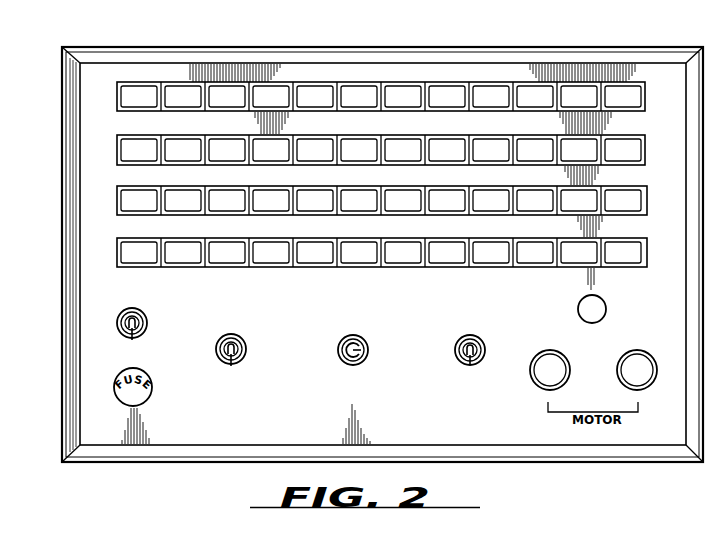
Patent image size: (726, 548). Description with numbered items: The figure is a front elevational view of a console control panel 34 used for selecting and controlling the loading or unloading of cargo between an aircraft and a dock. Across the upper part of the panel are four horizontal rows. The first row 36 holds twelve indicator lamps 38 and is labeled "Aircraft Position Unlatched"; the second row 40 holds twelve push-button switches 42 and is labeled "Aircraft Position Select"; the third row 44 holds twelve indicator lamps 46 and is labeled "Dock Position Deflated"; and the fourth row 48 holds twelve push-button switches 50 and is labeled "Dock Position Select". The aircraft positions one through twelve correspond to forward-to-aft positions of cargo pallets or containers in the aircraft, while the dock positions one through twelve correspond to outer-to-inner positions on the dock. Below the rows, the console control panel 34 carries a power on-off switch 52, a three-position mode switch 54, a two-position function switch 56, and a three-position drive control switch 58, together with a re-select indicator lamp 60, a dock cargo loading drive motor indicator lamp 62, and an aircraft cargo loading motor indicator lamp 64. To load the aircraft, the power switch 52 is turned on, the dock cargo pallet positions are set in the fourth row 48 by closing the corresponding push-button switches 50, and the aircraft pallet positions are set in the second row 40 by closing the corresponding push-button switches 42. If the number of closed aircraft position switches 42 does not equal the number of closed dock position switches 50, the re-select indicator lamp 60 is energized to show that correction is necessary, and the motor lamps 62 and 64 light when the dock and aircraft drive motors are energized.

The console control panel 34 is at (652, 46).
The first row 36 is at (645, 97).
The indicator lamps 38 is at (127, 106).
The second row 40 is at (645, 150).
The push-button switches 42 is at (127, 159).
The third row 44 is at (647, 197).
The indicator lamps 46 is at (127, 211).
The fourth row 48 is at (647, 250).
The push-button switches 50 is at (127, 263).
The power on-off switch 52 is at (122, 336).
The three-position mode switch 54 is at (215, 356).
The two-position function switch 56 is at (370, 350).
The three-position drive control switch 58 is at (460, 361).
The re-select indicator lamp 60 is at (600, 299).
The dock cargo loading drive motor indicator lamp 62 is at (566, 362).
The aircraft cargo loading motor indicator lamp 64 is at (652, 357).